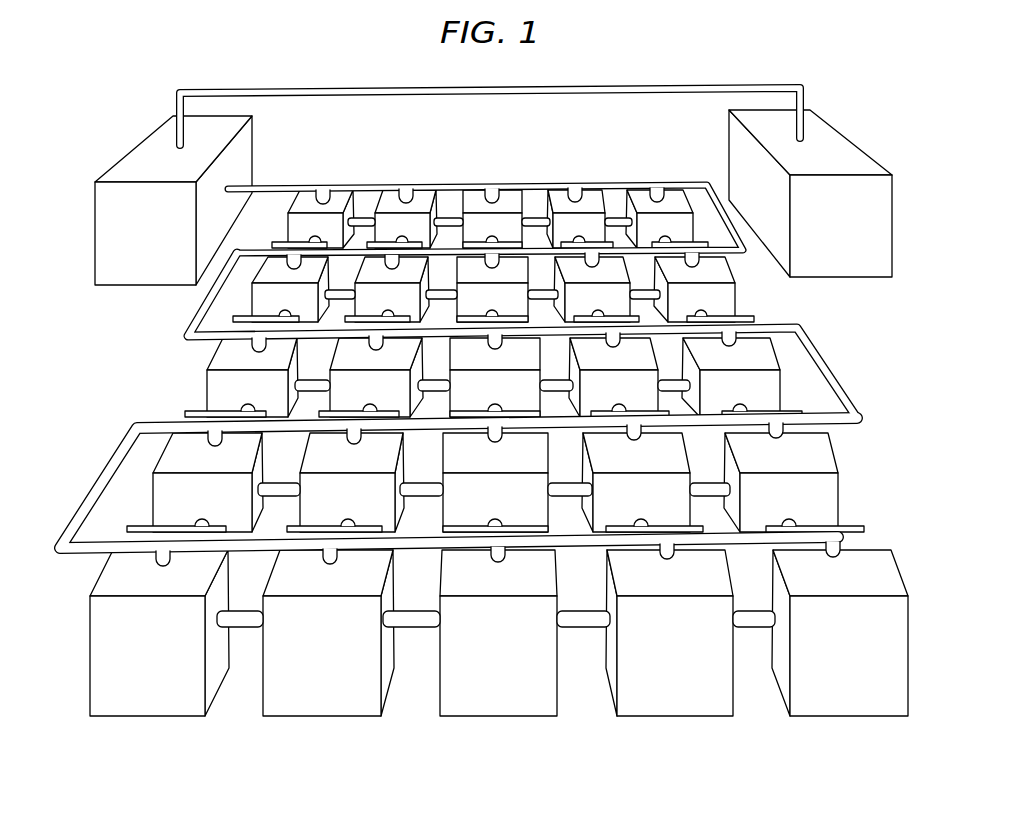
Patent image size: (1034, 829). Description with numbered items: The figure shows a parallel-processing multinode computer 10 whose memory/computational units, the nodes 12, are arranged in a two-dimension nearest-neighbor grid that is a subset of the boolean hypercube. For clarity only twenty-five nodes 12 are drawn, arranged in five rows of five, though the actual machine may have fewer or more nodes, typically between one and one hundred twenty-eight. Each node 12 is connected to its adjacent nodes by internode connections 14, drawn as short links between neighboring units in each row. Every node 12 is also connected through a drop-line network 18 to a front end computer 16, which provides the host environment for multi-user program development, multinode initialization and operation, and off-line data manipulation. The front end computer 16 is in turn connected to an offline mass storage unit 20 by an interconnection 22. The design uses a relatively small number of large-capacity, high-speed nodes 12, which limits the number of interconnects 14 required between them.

The computer 10 is at (996, 300).
The node 12 is at (165, 717).
The internode connection 14 is at (242, 627).
The front end computer 16 is at (95, 206).
The drop-line network 18 is at (264, 188).
The offline mass storage unit 20 is at (892, 187).
The interconnection 22 is at (398, 88).